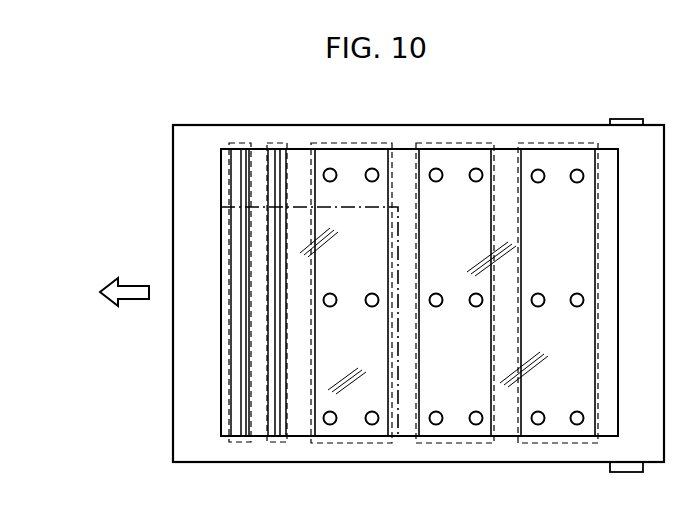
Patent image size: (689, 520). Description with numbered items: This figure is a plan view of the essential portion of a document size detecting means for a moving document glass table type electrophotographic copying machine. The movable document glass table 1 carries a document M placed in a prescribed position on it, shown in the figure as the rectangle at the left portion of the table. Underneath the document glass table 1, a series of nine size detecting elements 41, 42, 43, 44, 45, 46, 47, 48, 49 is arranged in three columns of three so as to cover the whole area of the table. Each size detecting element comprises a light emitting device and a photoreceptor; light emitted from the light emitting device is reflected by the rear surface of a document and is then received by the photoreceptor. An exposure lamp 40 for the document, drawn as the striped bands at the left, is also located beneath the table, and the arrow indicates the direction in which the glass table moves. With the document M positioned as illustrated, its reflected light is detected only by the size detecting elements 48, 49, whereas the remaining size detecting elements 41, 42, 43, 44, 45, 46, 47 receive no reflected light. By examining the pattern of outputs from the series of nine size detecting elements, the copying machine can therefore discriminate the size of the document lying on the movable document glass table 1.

The movable document glass table 1 is at (508, 420).
The exposure lamp 40 is at (258, 340).
The size detecting element 41 is at (560, 180).
The size detecting element 42 is at (560, 297).
The size detecting element 43 is at (557, 423).
The size detecting element 44 is at (460, 180).
The size detecting element 45 is at (458, 297).
The size detecting element 46 is at (457, 420).
The size detecting element 47 is at (352, 187).
The size detecting element 48 is at (352, 297).
The size detecting element 49 is at (352, 417).